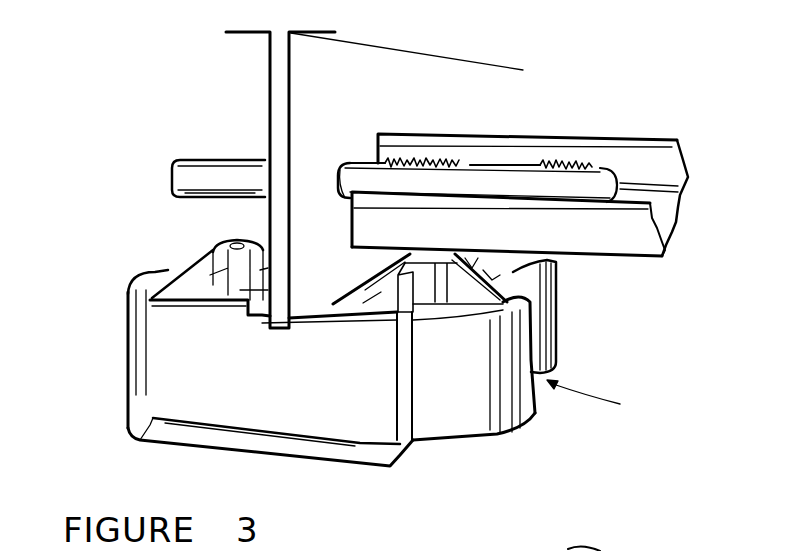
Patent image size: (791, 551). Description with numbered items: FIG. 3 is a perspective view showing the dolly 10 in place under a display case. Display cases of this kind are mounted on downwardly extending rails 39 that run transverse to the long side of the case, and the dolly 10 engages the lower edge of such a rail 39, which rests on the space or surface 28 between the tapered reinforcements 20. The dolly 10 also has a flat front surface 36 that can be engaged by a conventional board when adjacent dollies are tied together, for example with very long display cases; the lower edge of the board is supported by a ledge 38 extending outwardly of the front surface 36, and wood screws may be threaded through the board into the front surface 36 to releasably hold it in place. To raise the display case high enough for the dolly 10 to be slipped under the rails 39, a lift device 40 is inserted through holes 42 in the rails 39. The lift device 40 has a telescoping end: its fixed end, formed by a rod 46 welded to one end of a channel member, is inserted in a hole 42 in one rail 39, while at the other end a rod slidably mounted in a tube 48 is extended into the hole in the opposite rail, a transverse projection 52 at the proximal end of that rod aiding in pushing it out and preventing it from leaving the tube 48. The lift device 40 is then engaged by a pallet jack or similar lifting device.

The dolly 10 is at (602, 402).
The tapered reinforcements 20 is at (380, 292).
The space 28 is at (263, 317).
The flat front surface 36 is at (203, 375).
The ledge 38 is at (322, 445).
The rail 39 is at (395, 92).
The lift device 40 is at (600, 137).
The hole 42 is at (350, 178).
The rod 46 is at (194, 172).
The tube 48 is at (535, 550).
The transverse projection 52 is at (415, 542).